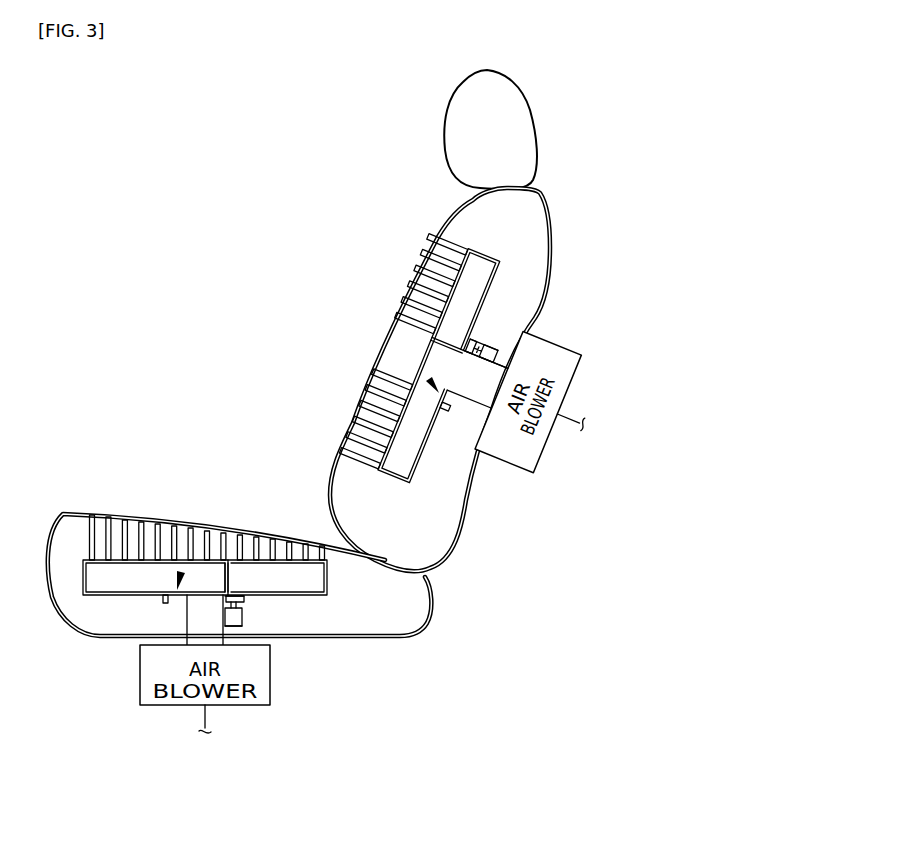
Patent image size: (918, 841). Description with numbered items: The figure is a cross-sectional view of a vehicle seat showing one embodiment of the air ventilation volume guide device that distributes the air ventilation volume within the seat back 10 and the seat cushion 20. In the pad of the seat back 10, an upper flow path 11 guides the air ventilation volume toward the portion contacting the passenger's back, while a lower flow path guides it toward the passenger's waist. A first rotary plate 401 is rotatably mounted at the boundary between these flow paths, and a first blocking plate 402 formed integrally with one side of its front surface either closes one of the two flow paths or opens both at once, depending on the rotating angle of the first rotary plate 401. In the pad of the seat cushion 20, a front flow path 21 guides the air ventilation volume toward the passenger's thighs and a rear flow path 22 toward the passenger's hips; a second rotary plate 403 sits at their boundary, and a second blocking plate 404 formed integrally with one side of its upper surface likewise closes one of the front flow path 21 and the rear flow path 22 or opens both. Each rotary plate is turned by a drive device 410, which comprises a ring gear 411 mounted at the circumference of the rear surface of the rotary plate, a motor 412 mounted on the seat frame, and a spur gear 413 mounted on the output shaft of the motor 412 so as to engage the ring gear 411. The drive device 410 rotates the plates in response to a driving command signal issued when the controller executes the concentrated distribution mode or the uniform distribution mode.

The seat back 10 is at (569, 206).
The upper flow path 11 is at (483, 275).
The seat cushion 20 is at (443, 630).
The front flow path 21 is at (110, 578).
The rear flow path 22 is at (318, 583).
The first rotary plate 401 is at (415, 368).
The first blocking plate 402 is at (458, 342).
The second rotary plate 403 is at (178, 570).
The second blocking plate 404 is at (215, 568).
The drive device 410 is at (663, 286).
The ring gear 411 is at (476, 336).
The motor 412 is at (499, 352).
The spur gear 413 is at (480, 344).